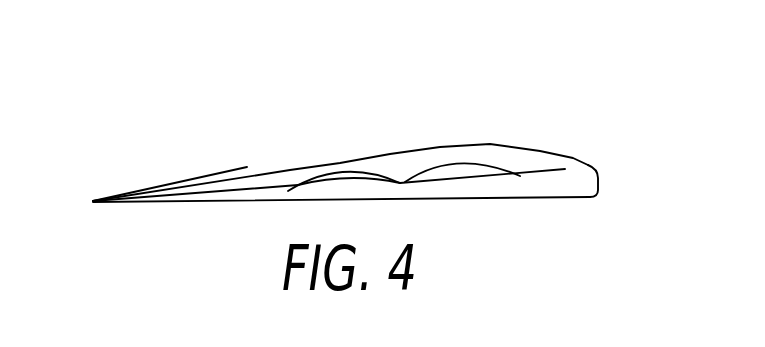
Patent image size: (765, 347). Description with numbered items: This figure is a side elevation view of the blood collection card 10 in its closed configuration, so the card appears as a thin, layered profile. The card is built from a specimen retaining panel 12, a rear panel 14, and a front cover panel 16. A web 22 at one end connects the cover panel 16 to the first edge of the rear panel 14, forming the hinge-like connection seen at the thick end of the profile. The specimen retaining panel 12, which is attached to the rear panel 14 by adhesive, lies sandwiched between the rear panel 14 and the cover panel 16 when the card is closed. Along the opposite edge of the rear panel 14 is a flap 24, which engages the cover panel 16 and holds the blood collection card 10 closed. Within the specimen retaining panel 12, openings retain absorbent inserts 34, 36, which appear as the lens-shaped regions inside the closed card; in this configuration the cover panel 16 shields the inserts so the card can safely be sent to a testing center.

The blood collection card 10 is at (168, 87).
The specimen retaining panel 12 is at (543, 168).
The rear panel 14 is at (485, 197).
The front cover panel 16 is at (290, 169).
The web 22 is at (600, 178).
The flap 24 is at (231, 168).
The absorbent insert 34 is at (457, 165).
The absorbent insert 36 is at (338, 173).